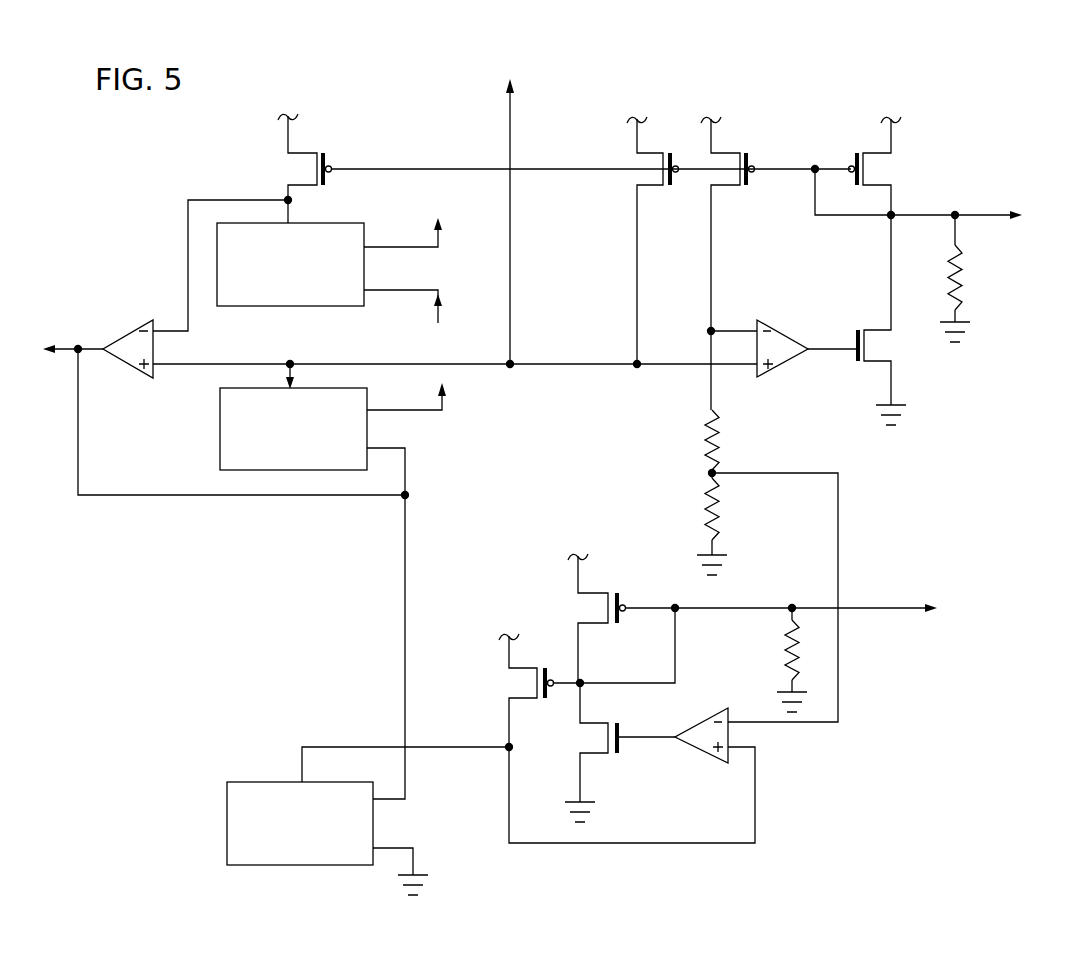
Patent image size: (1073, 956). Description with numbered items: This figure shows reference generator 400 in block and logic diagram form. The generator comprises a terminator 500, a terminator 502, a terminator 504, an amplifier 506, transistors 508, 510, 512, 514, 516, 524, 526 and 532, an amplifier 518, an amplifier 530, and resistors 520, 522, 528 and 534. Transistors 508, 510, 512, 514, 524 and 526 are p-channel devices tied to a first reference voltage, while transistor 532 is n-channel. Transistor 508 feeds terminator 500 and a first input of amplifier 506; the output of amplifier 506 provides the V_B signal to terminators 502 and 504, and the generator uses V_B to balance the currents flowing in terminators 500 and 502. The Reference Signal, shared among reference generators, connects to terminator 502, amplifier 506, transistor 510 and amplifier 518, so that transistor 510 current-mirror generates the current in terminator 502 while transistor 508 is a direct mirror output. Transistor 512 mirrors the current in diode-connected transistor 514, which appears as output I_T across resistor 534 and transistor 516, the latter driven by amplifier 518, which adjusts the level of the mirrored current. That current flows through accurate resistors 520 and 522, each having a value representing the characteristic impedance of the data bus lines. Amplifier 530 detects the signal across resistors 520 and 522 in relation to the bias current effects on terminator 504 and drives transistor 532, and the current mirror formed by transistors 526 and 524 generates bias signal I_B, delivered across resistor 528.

The reference generator 400 is at (884, 694).
The terminator 500 is at (276, 311).
The terminator 502 is at (220, 424).
The terminator 504 is at (227, 815).
The amplifier 506 is at (129, 327).
The transistor 508 is at (290, 182).
The transistor 510 is at (648, 187).
The transistor 512 is at (727, 187).
The transistor 514 is at (875, 152).
The transistor 516 is at (890, 336).
The amplifier 518 is at (777, 329).
The resistor 520 is at (700, 416).
The resistor 522 is at (705, 516).
The transistor 524 is at (590, 626).
The transistor 526 is at (520, 703).
The resistor 528 is at (788, 656).
The amplifier 530 is at (712, 760).
The transistor 532 is at (600, 758).
The resistor 534 is at (965, 281).